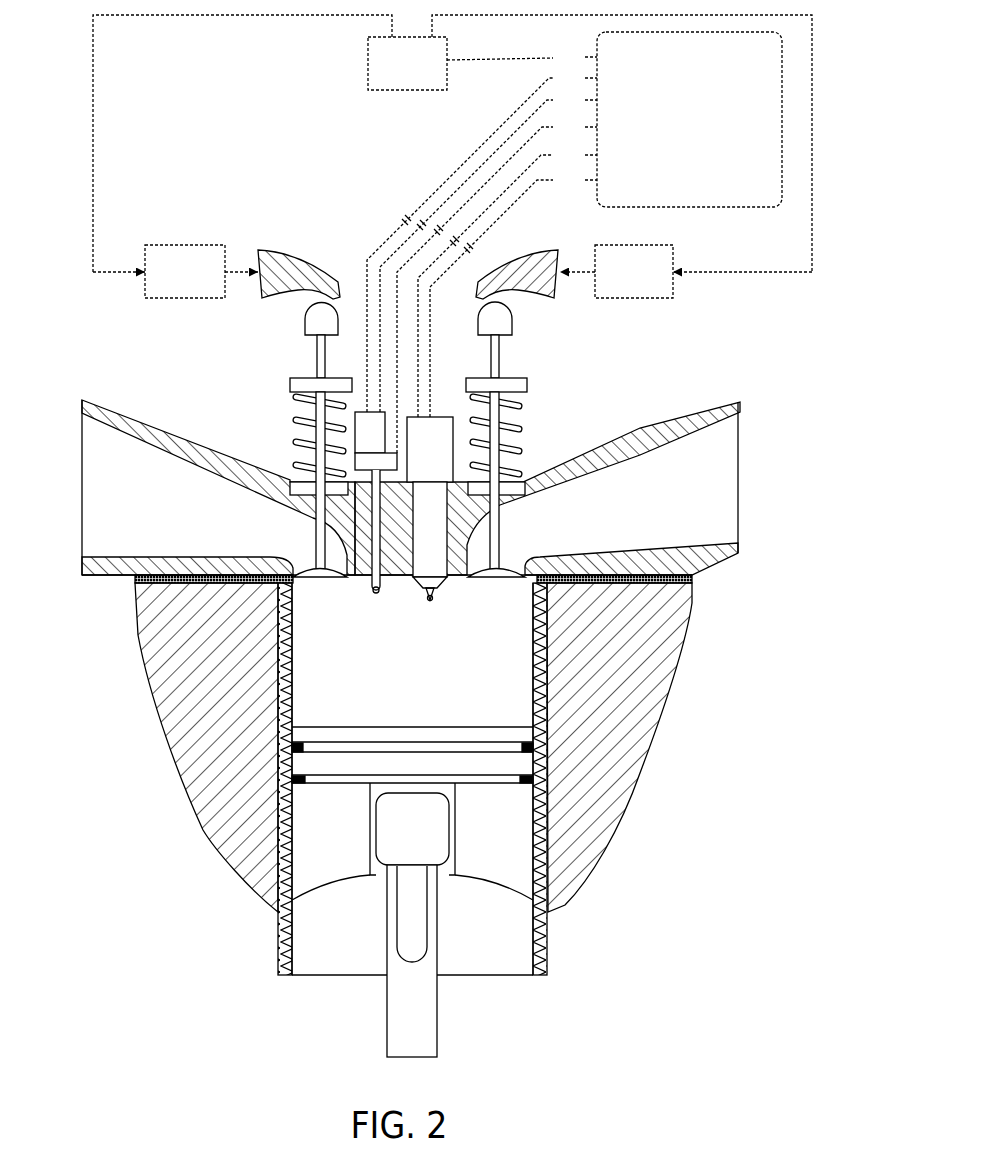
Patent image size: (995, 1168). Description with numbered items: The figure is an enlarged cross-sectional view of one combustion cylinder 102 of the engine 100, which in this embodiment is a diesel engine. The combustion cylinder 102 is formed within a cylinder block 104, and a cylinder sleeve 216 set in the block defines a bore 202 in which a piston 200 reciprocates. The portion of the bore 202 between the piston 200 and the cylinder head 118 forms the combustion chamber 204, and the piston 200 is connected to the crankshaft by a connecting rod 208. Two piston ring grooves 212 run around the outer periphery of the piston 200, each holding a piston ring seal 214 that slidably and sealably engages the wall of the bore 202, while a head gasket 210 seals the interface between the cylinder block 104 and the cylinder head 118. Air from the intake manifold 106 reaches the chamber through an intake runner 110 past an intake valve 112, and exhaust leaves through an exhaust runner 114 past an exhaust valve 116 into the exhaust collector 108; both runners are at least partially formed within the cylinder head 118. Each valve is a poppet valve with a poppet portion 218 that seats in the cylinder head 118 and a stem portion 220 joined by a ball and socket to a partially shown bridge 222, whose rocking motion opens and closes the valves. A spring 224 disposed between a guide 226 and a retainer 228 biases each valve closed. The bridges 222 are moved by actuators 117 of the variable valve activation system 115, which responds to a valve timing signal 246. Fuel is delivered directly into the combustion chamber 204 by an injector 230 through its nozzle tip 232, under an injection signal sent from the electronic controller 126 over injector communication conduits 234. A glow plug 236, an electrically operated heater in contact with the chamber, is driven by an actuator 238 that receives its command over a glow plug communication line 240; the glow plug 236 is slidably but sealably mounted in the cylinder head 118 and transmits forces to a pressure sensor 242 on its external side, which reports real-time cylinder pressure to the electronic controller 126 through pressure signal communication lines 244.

The engine 100 is at (249, 139).
The combustion cylinder 102 is at (527, 623).
The cylinder block 104 is at (672, 644).
The intake manifold 106 is at (82, 467).
The exhaust collector 108 is at (742, 442).
The intake runner 110 is at (142, 511).
The intake valve 112 is at (307, 567).
The exhaust runner 114 is at (662, 511).
The variable valve activation system 115 is at (392, 75).
The exhaust valve 116 is at (507, 564).
The actuator 117 is at (170, 282).
The cylinder head 118 is at (670, 428).
The electronic controller 126 is at (675, 151).
The piston 200 is at (329, 868).
The bore 202 is at (304, 705).
The combustion chamber 204 is at (393, 701).
The connecting rod 208 is at (427, 1005).
The head gasket 210 is at (694, 580).
The piston ring groove 212 is at (332, 749).
The piston ring seal 214 is at (536, 780).
The cylinder sleeve 216 is at (545, 822).
The poppet portion 218 is at (313, 577).
The stem portion 220 is at (318, 352).
The bridge 222 is at (300, 262).
The spring 224 is at (294, 440).
The guide 226 is at (292, 488).
The retainer 228 is at (297, 384).
The injector 230 is at (438, 428).
The nozzle tip 232 is at (430, 603).
The injector communication conduit 234 is at (507, 280).
The glow plug 236 is at (377, 594).
The actuator 238 is at (363, 470).
The glow plug communication line 240 is at (497, 284).
The pressure sensor 242 is at (366, 412).
The pressure signal communication line 244 is at (482, 239).
The valve timing signal 246 is at (522, 57).